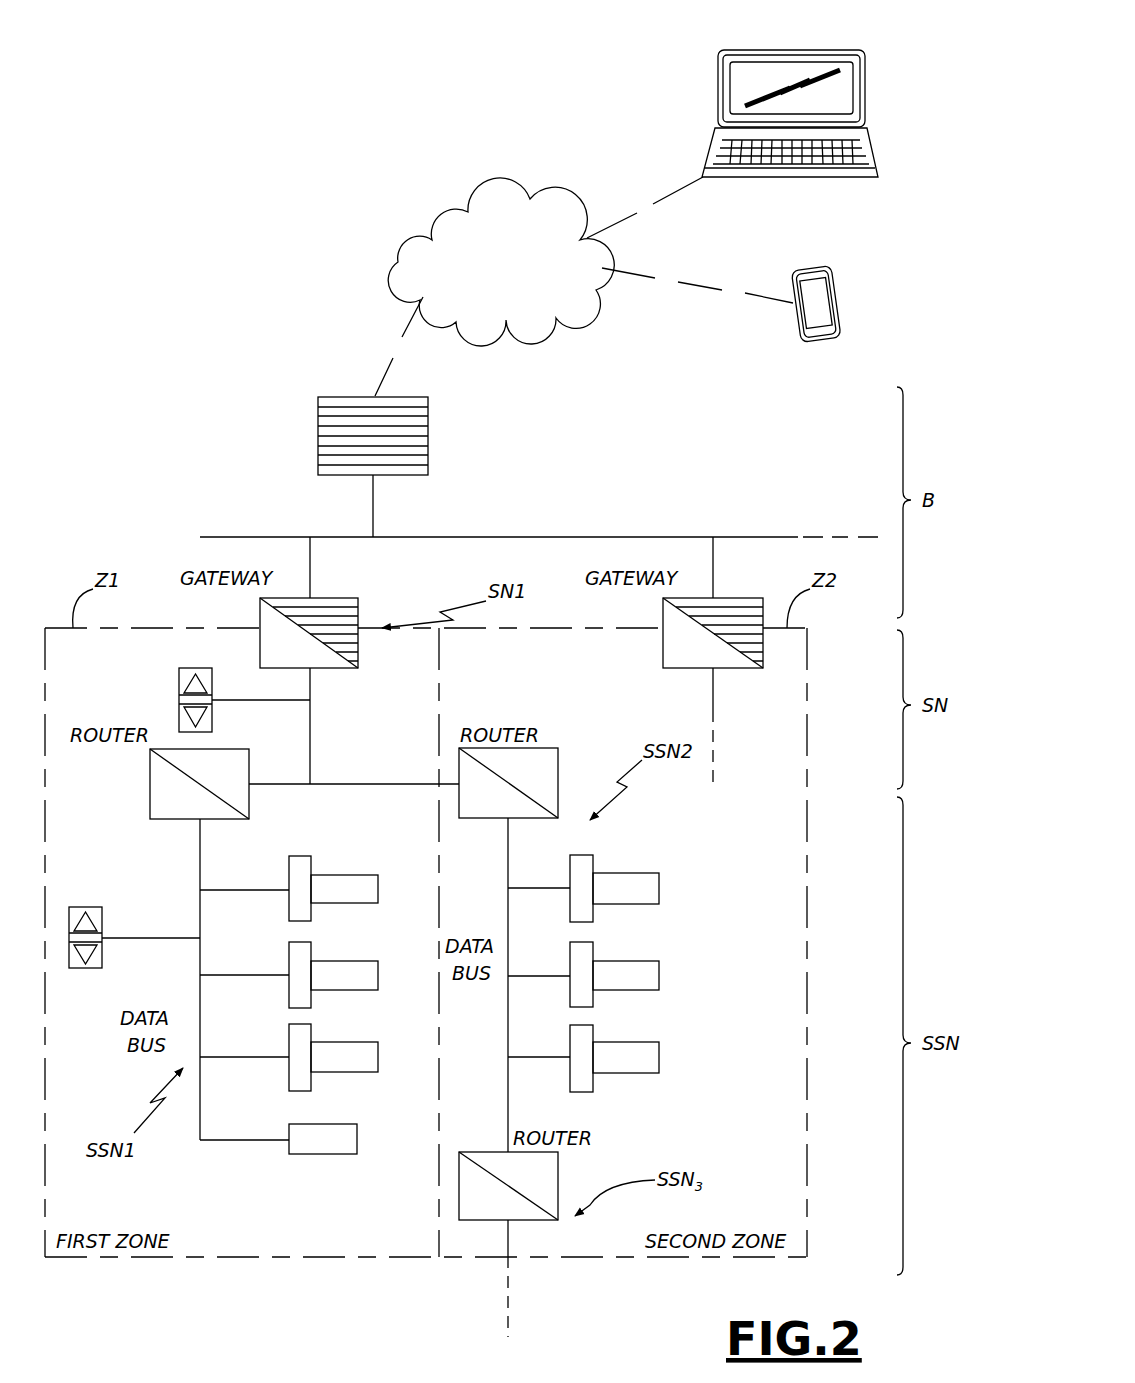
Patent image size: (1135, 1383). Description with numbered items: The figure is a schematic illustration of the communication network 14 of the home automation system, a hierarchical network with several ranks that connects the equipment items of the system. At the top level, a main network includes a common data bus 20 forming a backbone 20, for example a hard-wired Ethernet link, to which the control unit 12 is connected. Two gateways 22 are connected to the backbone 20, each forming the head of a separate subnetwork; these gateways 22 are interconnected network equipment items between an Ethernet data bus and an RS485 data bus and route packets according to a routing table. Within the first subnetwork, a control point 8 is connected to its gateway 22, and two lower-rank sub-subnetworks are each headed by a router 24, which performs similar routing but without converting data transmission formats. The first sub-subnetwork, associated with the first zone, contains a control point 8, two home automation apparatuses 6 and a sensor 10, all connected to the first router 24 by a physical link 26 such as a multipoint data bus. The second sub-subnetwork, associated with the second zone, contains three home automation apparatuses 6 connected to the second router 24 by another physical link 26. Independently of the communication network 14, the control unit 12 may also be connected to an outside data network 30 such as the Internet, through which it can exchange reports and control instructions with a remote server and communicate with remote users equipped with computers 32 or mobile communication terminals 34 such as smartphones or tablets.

The home automation apparatus 6 is at (360, 890).
The control point 8 is at (185, 668).
The sensor 10 is at (338, 1145).
The control unit 12 is at (346, 422).
The communication network 14 is at (277, 221).
The common data bus 20 is at (572, 537).
The gateway 22 is at (270, 653).
The router 24 is at (163, 795).
The physical link 26 is at (200, 993).
The outside data network 30 is at (474, 234).
The computer 32 is at (873, 88).
The mobile communication terminal 34 is at (845, 305).